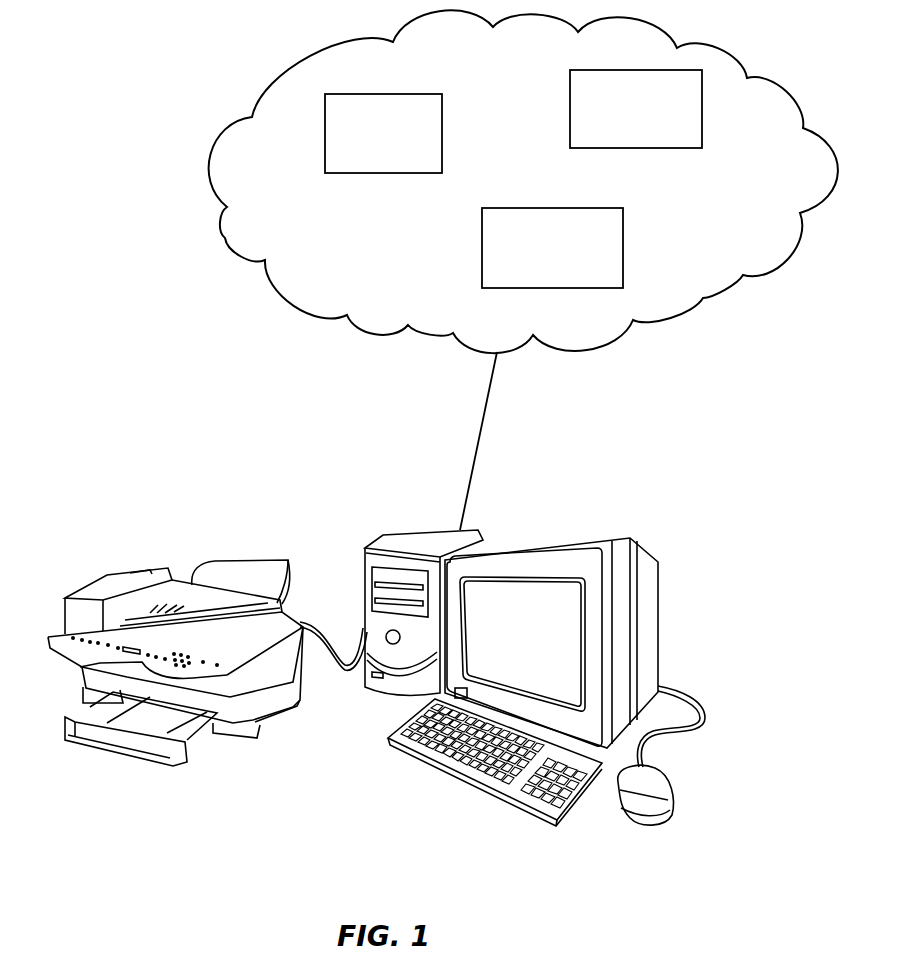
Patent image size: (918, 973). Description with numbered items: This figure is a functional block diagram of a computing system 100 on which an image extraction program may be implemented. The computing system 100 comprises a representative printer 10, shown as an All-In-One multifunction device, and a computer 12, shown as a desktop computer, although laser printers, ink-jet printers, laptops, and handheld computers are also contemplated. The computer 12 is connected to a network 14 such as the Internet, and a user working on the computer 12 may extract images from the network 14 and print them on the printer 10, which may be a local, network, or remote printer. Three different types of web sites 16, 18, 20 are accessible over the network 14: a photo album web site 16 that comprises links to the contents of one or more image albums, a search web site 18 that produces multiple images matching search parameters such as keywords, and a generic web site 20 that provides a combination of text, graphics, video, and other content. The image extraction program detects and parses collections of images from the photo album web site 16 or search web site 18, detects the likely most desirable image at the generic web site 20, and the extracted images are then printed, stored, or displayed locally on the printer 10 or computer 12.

The computing system 100 is at (159, 366).
The network 14 is at (318, 49).
The photo album web site 16 is at (393, 175).
The search web site 18 is at (652, 149).
The generic web site 20 is at (560, 290).
The printer 10 is at (105, 580).
The computer 12 is at (410, 532).